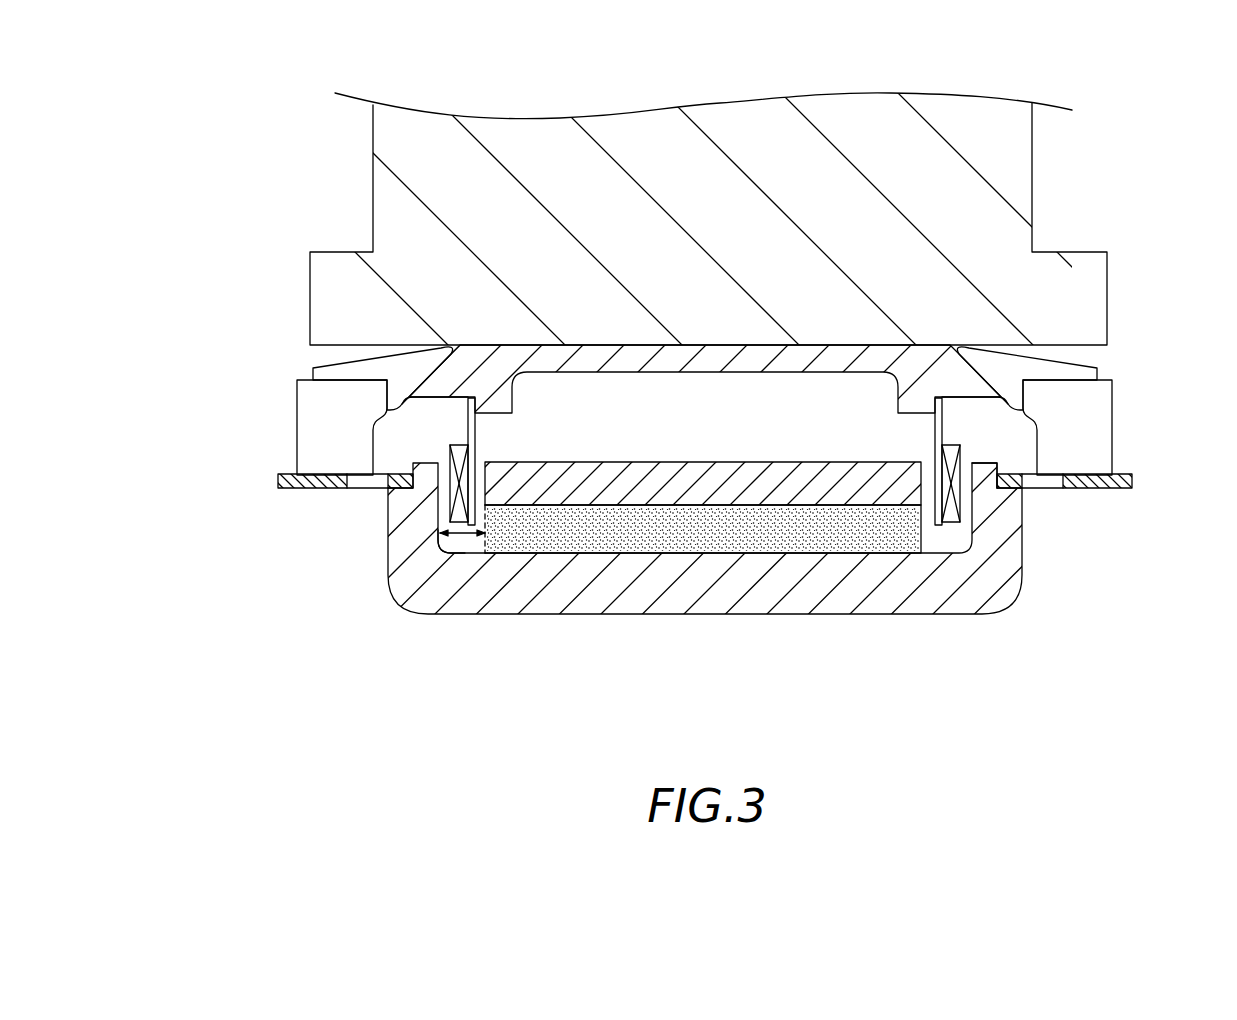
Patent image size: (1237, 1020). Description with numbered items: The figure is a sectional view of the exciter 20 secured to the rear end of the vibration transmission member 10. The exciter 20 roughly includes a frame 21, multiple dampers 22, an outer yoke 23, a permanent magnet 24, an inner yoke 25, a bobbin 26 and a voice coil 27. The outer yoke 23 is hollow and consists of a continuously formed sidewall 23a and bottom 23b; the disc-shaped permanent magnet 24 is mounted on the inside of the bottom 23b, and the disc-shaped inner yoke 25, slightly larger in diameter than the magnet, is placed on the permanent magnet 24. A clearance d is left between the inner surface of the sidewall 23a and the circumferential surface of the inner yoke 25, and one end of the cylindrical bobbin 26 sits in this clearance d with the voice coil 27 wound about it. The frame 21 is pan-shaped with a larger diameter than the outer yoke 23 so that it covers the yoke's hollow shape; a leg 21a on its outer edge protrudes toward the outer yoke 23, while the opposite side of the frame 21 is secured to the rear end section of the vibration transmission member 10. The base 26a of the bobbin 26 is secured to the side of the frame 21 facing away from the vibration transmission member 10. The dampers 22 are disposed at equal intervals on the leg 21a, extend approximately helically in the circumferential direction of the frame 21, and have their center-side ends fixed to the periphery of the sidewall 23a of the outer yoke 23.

The vibration transmission member 10 is at (1033, 168).
The exciter 20 is at (721, 562).
The frame 21 is at (720, 360).
The leg 21a is at (297, 415).
The dampers 22 is at (268, 480).
The outer yoke 23 is at (875, 616).
The sidewall 23a is at (987, 462).
The bottom 23b is at (436, 552).
The permanent magnet 24 is at (754, 540).
The inner yoke 25 is at (670, 495).
The bobbin 26 is at (475, 428).
The base 26a is at (465, 398).
The voice coil 27 is at (951, 525).
The clearance d is at (470, 538).